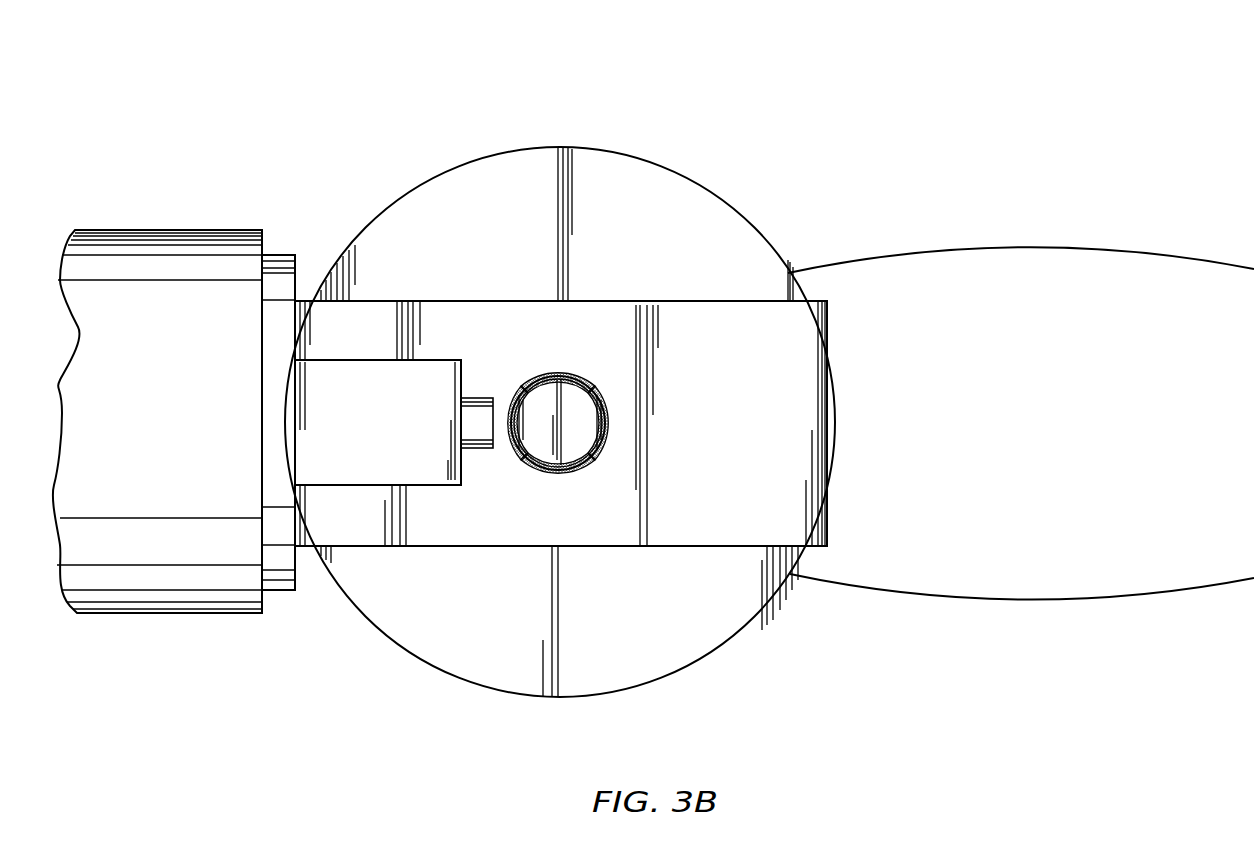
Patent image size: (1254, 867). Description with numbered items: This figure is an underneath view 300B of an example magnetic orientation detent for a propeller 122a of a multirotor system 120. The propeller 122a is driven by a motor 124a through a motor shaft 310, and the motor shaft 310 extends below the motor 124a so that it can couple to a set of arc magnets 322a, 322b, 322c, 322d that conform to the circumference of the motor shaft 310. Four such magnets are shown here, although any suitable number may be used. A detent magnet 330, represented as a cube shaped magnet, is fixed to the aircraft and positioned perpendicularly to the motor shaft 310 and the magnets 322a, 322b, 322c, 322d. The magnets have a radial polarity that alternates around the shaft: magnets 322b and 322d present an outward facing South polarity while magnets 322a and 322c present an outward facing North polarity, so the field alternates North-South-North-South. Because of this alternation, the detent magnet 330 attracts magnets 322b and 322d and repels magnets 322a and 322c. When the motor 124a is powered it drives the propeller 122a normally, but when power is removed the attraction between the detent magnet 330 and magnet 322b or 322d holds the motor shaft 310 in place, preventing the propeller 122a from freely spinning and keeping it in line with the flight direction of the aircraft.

The underneath view 300B is at (1133, 105).
The multirotor system 120 is at (93, 228).
The motor 124a is at (705, 190).
The propeller 122a is at (1077, 245).
The motor shaft 310 is at (577, 432).
The magnet 322a is at (562, 362).
The magnet 322b is at (615, 397).
The magnet 322c is at (563, 480).
The magnet 322d is at (514, 390).
The detent magnet 330 is at (488, 450).